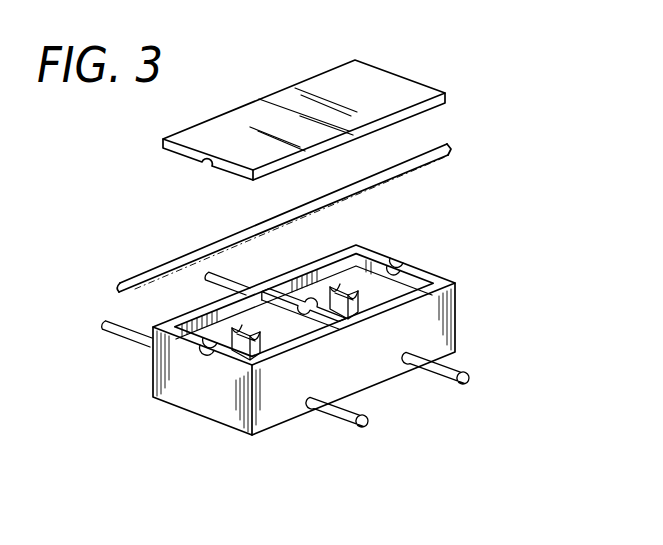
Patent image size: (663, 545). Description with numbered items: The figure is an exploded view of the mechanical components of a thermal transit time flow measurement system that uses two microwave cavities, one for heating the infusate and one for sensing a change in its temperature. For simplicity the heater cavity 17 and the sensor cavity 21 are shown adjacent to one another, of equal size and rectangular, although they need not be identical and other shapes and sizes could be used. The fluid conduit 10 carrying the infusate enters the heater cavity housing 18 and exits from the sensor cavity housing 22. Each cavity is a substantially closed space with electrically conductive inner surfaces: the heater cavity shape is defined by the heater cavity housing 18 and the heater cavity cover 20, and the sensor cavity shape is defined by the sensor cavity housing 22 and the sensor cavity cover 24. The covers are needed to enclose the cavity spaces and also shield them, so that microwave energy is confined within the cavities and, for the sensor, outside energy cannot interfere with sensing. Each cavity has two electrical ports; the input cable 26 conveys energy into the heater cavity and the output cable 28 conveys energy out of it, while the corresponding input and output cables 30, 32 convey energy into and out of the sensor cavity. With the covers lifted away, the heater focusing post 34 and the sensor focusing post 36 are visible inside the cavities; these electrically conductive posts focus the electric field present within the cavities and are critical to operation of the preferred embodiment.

The fluid conduit 10 is at (195, 248).
The heater cavity 17 is at (333, 273).
The heater cavity housing 18 is at (377, 362).
The heater cavity cover 20 is at (337, 83).
The sensor cavity 21 is at (217, 338).
The sensor cavity housing 22 is at (207, 403).
The sensor cavity cover 24 is at (222, 123).
The input cable 26 is at (230, 281).
The output cable 28 is at (463, 366).
The input cable 30 is at (122, 337).
The output cable 32 is at (337, 421).
The heater focusing post 34 is at (370, 293).
The sensor focusing post 36 is at (238, 344).